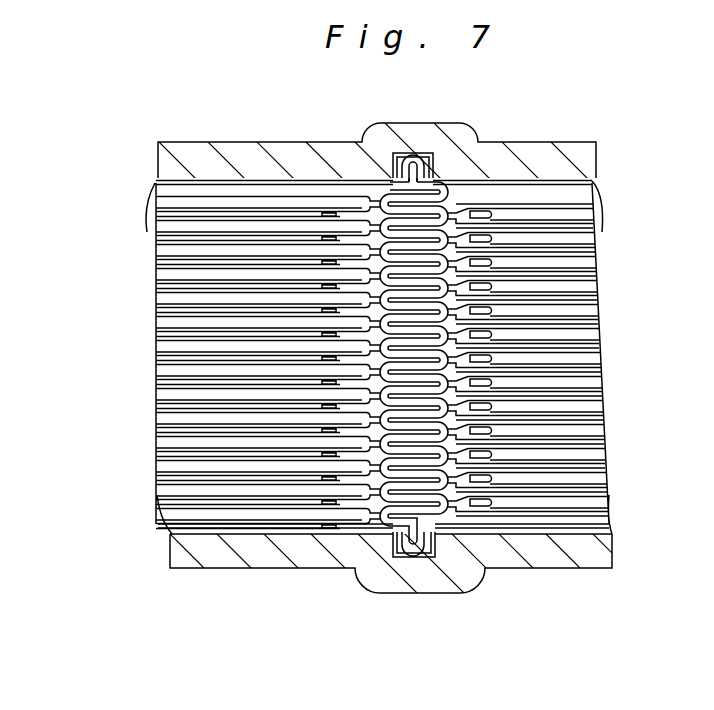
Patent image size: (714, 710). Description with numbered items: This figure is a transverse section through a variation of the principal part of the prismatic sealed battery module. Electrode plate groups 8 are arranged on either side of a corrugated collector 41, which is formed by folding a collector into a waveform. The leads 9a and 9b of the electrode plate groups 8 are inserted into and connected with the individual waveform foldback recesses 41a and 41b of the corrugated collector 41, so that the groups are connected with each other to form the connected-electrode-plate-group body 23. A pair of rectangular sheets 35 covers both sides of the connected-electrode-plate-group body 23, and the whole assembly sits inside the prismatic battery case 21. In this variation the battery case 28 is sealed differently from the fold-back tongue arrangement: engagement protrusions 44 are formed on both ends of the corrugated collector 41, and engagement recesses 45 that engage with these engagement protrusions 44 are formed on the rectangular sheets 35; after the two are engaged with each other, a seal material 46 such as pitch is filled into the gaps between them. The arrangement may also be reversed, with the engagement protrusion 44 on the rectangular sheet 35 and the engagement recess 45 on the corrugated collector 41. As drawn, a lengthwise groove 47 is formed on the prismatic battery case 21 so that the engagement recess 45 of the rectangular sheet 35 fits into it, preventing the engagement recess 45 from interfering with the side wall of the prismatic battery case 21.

The electrode plate group 8 is at (150, 292).
The lead 9a is at (368, 540).
The lead 9b is at (445, 525).
The prismatic battery case 21 is at (421, 157).
The connected-electrode-plate-group body 23 is at (128, 240).
The battery case 28 is at (277, 535).
The rectangular sheet 35 is at (287, 165).
The corrugated collector 41 is at (458, 190).
The waveform foldback recess 41a is at (372, 500).
The waveform foldback recess 41b is at (478, 520).
The engagement protrusion 44 is at (450, 185).
The engagement recess 45 is at (392, 160).
The seal material 46 is at (403, 155).
The lengthwise groove 47 is at (411, 157).